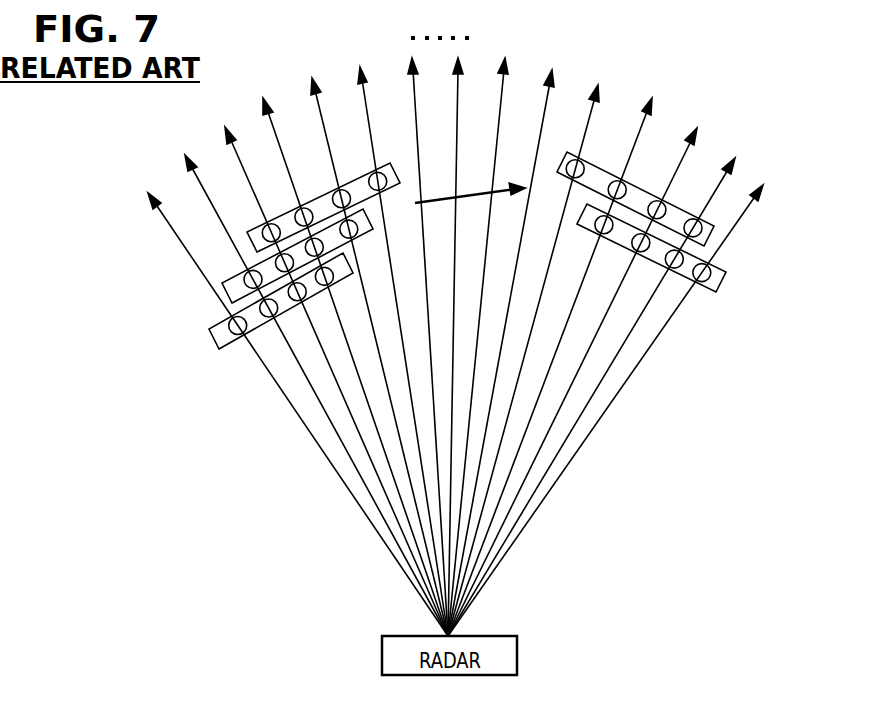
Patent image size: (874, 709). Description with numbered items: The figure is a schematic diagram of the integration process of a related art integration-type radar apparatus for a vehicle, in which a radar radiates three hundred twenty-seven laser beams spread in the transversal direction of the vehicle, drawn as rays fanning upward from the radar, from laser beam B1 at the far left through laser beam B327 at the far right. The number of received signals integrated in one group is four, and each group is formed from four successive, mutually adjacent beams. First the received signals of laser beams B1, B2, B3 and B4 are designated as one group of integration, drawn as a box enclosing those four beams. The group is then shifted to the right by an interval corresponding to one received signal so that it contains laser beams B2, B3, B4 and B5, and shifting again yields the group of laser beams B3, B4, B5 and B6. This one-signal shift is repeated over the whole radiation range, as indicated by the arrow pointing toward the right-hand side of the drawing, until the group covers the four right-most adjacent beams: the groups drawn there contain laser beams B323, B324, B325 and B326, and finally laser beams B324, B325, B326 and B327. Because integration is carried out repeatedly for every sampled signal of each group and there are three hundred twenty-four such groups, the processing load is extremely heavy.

The laser beam B1 is at (248, 352).
The laser beam B2 is at (272, 335).
The laser beam B3 is at (306, 313).
The laser beam B4 is at (338, 296).
The laser beam B5 is at (376, 222).
The laser beam B6 is at (373, 172).
The laser beam B323 is at (578, 160).
The laser beam B324 is at (589, 250).
The laser beam B325 is at (630, 267).
The laser beam B326 is at (676, 290).
The laser beam B327 is at (690, 310).